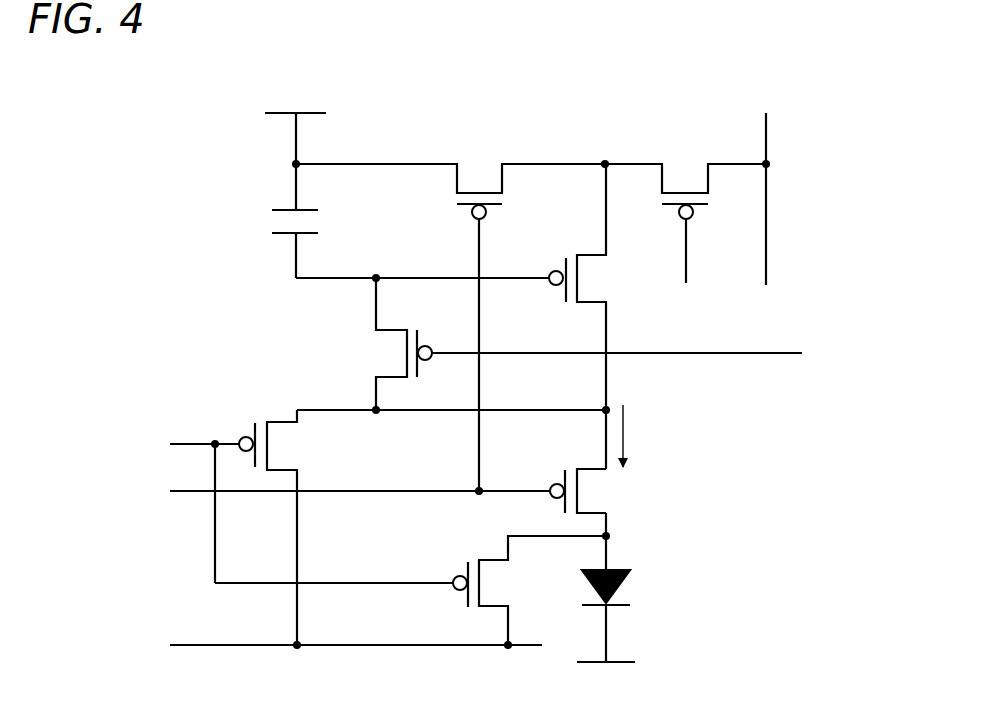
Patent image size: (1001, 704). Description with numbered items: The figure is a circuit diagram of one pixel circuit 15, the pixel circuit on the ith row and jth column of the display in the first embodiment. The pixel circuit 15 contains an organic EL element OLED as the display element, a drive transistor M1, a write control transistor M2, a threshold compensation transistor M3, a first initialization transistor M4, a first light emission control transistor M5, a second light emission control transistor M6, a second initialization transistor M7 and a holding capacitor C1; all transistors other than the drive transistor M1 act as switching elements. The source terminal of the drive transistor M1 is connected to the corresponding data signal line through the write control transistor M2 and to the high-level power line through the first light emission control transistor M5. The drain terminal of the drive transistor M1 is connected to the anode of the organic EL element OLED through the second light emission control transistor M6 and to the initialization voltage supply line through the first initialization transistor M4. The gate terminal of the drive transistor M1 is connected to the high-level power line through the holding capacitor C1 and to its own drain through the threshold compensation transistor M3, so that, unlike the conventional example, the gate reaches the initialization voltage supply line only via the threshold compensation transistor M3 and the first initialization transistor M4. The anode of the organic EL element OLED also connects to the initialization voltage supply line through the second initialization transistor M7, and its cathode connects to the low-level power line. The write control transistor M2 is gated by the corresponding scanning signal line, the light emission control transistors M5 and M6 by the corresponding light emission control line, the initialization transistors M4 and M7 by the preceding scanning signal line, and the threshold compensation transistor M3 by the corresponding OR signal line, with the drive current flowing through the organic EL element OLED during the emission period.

The pixel circuit 15 is at (499, 121).
The holding capacitor C1 is at (266, 222).
The drive transistor M1 is at (573, 253).
The write control transistor M2 is at (713, 197).
The threshold compensation transistor M3 is at (410, 327).
The first initialization transistor M4 is at (265, 420).
The first light emission control transistor M5 is at (450, 198).
The second light emission control transistor M6 is at (573, 466).
The second initialization transistor M7 is at (475, 558).
The organic EL element OLED is at (622, 584).